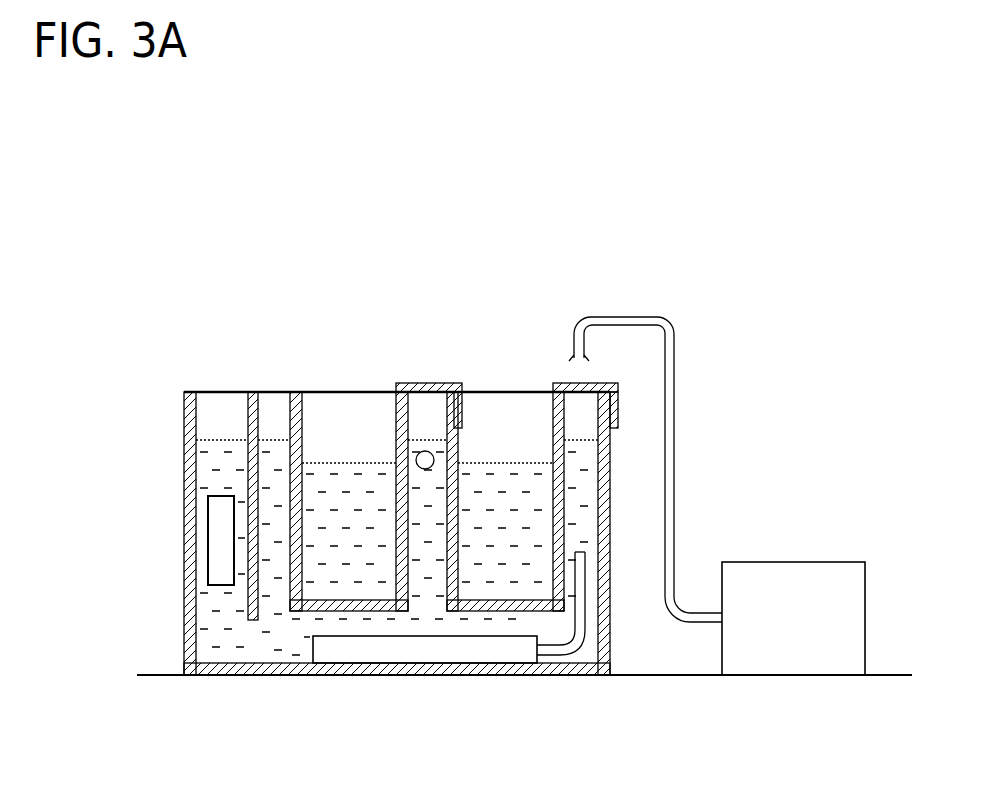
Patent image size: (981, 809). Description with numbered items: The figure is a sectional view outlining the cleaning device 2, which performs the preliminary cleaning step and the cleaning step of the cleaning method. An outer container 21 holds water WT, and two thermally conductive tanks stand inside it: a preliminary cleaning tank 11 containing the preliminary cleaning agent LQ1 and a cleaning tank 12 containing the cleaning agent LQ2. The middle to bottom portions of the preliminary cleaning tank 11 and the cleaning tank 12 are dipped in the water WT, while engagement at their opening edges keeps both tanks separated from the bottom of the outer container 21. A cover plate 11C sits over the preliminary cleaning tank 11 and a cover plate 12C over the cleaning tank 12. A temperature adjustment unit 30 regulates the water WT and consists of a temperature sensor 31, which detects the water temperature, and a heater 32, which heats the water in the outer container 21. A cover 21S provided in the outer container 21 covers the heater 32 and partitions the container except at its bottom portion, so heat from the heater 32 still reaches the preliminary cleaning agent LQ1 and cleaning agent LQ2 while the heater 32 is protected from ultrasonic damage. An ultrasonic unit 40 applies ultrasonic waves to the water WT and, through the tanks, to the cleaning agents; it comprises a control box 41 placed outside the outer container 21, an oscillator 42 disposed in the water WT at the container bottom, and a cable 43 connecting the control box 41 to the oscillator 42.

The cleaning device 2 is at (836, 208).
The outer container 21 is at (612, 655).
The cover 21S is at (248, 402).
The water WT is at (197, 467).
The preliminary cleaning tank 11 is at (308, 612).
The preliminary cleaning agent LQ1 is at (348, 480).
The cleaning tank 12 is at (545, 612).
The cleaning agent LQ2 is at (510, 480).
The cover plate 11C is at (425, 383).
The cover plate 12C is at (618, 402).
The temperature adjustment unit 30 is at (282, 278).
The temperature sensor 31 is at (425, 451).
The heater 32 is at (222, 496).
The oscillator 42 is at (430, 648).
The ultrasonic unit 40 is at (840, 455).
The control box 41 is at (780, 633).
The cable 43 is at (675, 470).